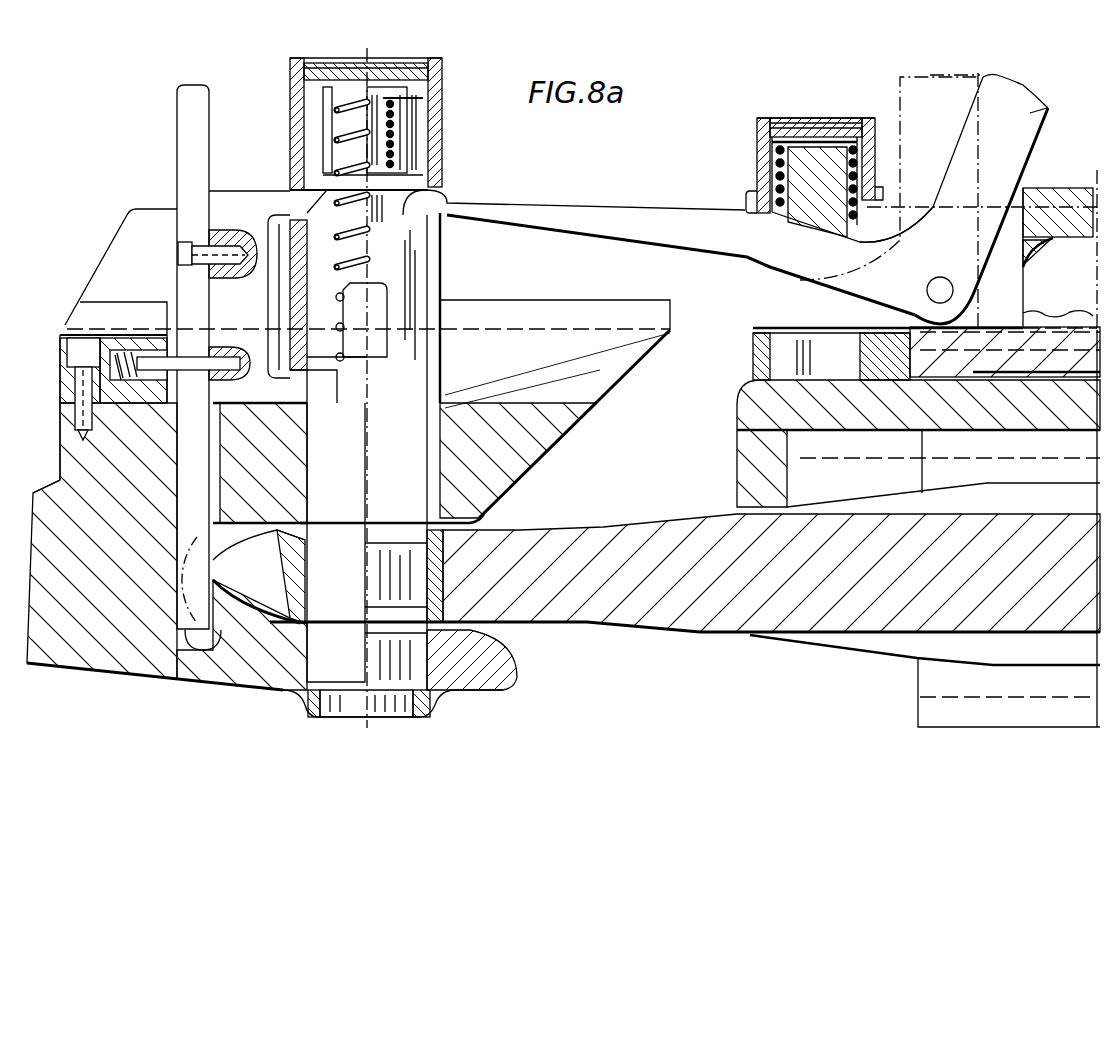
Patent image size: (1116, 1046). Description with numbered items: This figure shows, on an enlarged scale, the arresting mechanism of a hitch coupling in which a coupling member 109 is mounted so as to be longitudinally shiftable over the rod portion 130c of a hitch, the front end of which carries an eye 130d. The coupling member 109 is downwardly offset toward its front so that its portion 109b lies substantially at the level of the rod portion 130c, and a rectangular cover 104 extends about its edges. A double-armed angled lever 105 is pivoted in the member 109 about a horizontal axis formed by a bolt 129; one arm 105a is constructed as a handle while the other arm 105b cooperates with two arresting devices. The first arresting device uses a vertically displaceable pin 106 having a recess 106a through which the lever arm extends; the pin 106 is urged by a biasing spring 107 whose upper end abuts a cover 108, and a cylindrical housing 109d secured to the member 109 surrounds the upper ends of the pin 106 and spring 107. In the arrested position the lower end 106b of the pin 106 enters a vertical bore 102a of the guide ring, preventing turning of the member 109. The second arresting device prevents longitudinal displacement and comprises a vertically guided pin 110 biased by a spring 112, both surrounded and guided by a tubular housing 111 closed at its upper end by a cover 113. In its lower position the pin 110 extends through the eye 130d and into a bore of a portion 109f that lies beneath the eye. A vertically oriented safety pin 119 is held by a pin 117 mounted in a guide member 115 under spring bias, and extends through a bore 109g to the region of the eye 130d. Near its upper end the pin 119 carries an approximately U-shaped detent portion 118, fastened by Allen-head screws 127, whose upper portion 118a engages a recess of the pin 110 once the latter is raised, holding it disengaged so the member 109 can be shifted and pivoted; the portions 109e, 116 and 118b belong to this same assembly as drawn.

The vertical bore 102a is at (760, 377).
The rectangular cover 104 is at (1073, 193).
The double-armed angled lever 105 is at (1031, 155).
The handle arm 105a is at (1070, 97).
The second lever arm 105b is at (617, 208).
The vertically displaceable bolt or pin 106 is at (830, 167).
The recess 106a is at (885, 195).
The lower end of pin 106b is at (783, 310).
The biasing spring 107 is at (800, 137).
The cover 108 is at (778, 137).
The coupling member 109 is at (483, 233).
The front end portion of coupling member 109b is at (38, 513).
The housing 109d is at (757, 140).
The lower bushing 109e is at (440, 697).
The portion beneath the eye 109f is at (492, 672).
The bore 109g is at (163, 620).
The vertically guided bolt or pin 110 is at (410, 237).
The tubular housing member 111 is at (437, 120).
The spring 112 is at (383, 100).
The cover 113 is at (387, 78).
The guide member 115 is at (63, 393).
The bolt 116 is at (70, 348).
The pin 117 is at (148, 353).
The detent portion 118 is at (217, 210).
The upper portion of detent portion 118a is at (300, 193).
The bracket plate 118b is at (307, 392).
The safety or detent pin 119 is at (185, 130).
The Allen-head screws 127 is at (230, 250).
The bolt 129 is at (950, 293).
The rod portion 130c is at (602, 603).
The eye 130d is at (250, 590).